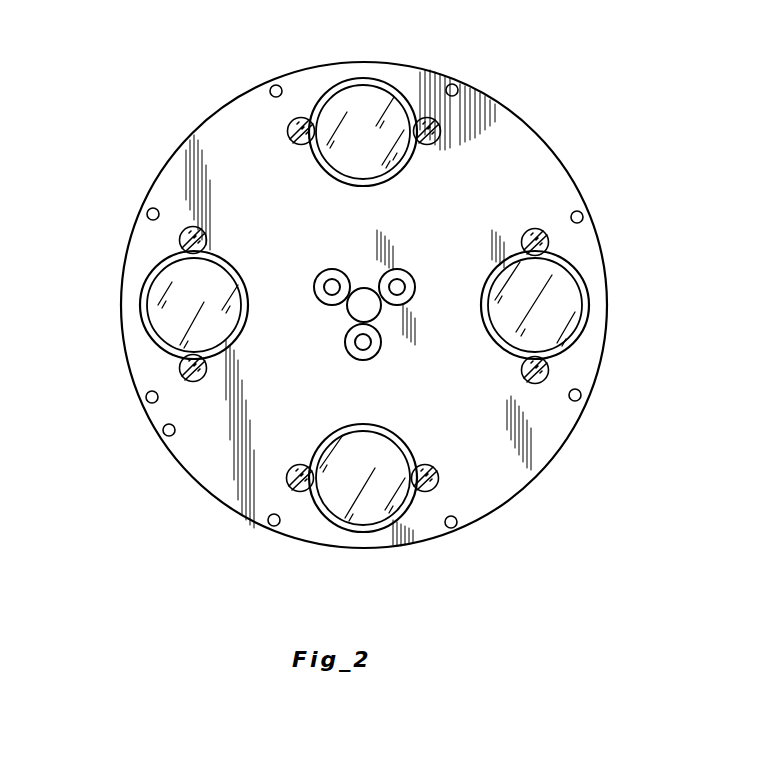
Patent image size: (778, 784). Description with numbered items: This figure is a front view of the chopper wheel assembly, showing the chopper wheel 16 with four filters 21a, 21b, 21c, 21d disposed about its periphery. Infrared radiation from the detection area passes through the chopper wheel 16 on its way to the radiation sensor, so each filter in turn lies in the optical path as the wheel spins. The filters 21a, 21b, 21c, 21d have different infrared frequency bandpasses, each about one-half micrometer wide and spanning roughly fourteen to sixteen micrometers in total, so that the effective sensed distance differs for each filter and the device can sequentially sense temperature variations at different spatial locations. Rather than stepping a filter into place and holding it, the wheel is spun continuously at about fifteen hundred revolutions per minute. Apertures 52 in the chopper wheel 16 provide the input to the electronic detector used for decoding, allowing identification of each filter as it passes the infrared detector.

The chopper wheel 16 is at (193, 477).
The apertures 52 is at (270, 83).
The filter 21a is at (362, 95).
The filter 21b is at (575, 307).
The filter 21c is at (370, 513).
The filter 21d is at (170, 313).